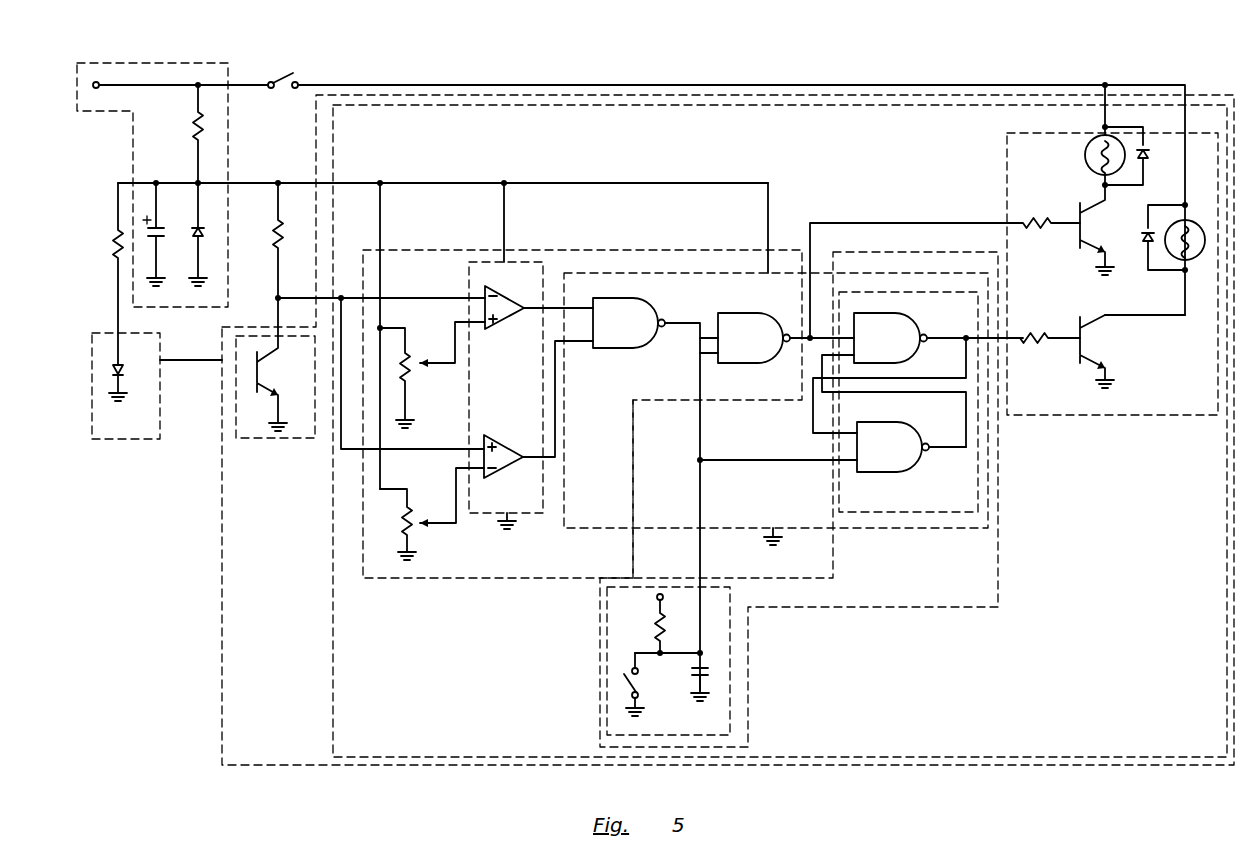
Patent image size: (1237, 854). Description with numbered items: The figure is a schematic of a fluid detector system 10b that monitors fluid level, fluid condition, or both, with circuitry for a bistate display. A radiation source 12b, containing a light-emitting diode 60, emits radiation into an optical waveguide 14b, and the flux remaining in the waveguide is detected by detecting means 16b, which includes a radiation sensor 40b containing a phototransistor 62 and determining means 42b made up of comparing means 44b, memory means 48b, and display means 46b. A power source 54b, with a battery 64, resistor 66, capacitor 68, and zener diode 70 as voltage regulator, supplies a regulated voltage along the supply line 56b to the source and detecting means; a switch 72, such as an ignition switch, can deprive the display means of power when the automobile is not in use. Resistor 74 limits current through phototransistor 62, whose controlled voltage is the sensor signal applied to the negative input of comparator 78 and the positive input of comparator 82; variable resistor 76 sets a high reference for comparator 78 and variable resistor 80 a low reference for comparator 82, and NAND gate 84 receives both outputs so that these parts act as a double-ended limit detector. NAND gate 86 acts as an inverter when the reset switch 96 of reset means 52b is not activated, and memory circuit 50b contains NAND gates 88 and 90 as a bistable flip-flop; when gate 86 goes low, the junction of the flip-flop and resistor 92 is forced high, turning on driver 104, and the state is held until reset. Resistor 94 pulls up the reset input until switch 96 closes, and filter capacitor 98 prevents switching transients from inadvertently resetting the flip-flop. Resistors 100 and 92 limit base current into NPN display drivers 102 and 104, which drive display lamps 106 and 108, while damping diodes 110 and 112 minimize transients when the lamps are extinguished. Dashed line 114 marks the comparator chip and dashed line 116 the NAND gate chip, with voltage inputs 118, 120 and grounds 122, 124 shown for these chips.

The fluid detector system 10b is at (639, 187).
The radiation source 12b is at (103, 333).
The optical waveguide 14b is at (203, 343).
The detecting means 16b is at (222, 500).
The radiation sensor 40b is at (298, 438).
The determining means 42b is at (333, 607).
The comparing means 44b is at (638, 492).
The display means 46b is at (1110, 415).
The memory means 48b is at (833, 548).
The memory circuit 50b is at (893, 518).
The reset means 52b is at (732, 607).
The power source 54b is at (228, 84).
The supply line 56b is at (278, 160).
The light-emitting diode 60 is at (122, 374).
The phototransistor 62 is at (257, 385).
The battery 64 is at (96, 88).
The resistor 66 is at (198, 128).
The capacitor 68 is at (186, 216).
The zener diode 70 is at (204, 230).
The switch 72 is at (292, 80).
The resistor 74 is at (273, 236).
The variable resistor 76 is at (414, 380).
The comparator 78 is at (502, 328).
The variable resistor 80 is at (400, 521).
The comparator 82 is at (526, 423).
The NAND gate 84 is at (648, 302).
The NAND gate 86 is at (780, 297).
The NAND gate 88 is at (888, 312).
The NAND gate 90 is at (893, 422).
The resistor 92 is at (1025, 334).
The resistor 94 is at (655, 628).
The reset switch 96 is at (640, 692).
The filter capacitor 98 is at (704, 668).
The resistor 100 is at (1040, 226).
The display driver 102 is at (1084, 206).
The display driver 104 is at (1082, 322).
The display lamp 106 is at (1087, 165).
The display lamp 108 is at (1178, 258).
The damping diode 110 is at (1147, 154).
The damping diode 112 is at (1140, 236).
The dashed line 114 is at (470, 513).
The dashed line 116 is at (940, 535).
The voltage input 118 is at (508, 236).
The voltage input 120 is at (768, 236).
The ground 122 is at (512, 524).
The ground 124 is at (782, 538).